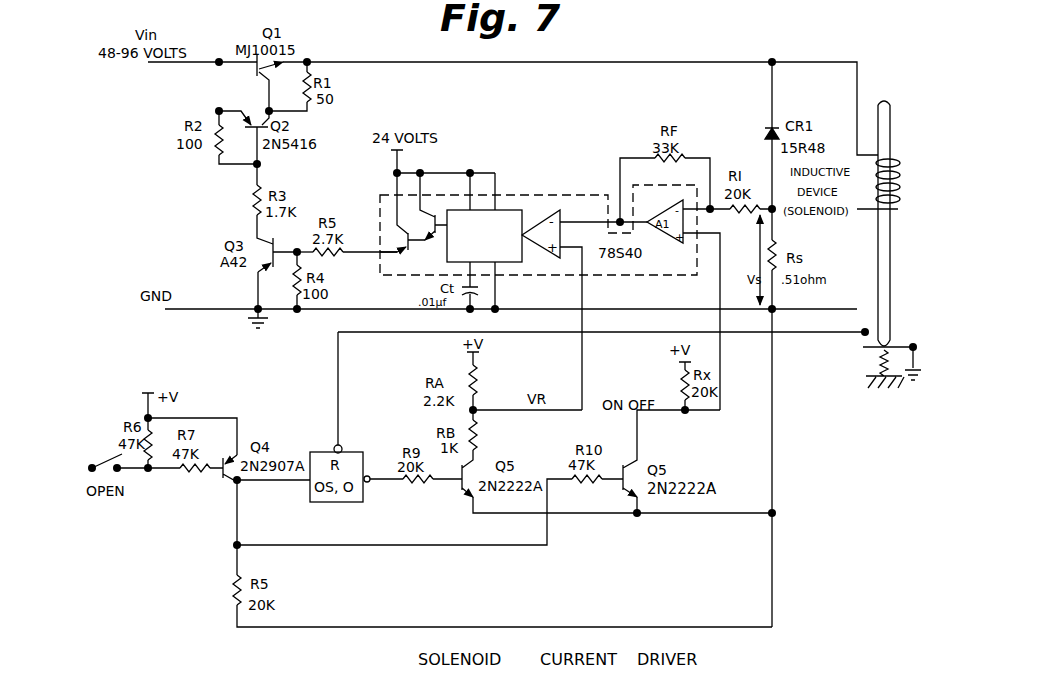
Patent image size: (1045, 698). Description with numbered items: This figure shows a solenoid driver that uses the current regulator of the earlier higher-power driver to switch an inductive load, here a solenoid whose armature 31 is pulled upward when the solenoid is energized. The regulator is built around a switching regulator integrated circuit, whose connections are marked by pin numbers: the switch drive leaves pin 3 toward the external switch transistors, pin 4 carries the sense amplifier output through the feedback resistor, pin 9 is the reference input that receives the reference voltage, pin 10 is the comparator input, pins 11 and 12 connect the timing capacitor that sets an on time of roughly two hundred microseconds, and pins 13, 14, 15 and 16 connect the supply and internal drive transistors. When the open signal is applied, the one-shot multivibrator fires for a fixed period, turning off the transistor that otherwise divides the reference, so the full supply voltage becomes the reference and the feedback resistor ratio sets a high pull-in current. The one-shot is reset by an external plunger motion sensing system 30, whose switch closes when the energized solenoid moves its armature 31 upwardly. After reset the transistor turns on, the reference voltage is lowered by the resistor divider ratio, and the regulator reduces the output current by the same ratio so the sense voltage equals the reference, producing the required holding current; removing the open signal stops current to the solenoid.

The plunger motion sensing system 30 is at (860, 347).
The armature 31 is at (890, 253).
The pin 3 of regulator 78S40 3 is at (370, 242).
The pin 4 of regulator 78S40 4 is at (663, 190).
The pin 9 of regulator 78S40 9 is at (579, 328).
The pin 10 of regulator 78S40 10 is at (603, 213).
The pin 11 of regulator 78S40 11 is at (503, 285).
The pin 12 of regulator 78S40 12 is at (474, 285).
The pin 13 of regulator 78S40 13 is at (501, 191).
The pin 14 of regulator 78S40 14 is at (477, 191).
The pin 15 of regulator 78S40 15 is at (425, 195).
The pin 16 of regulator 78S40 16 is at (399, 203).